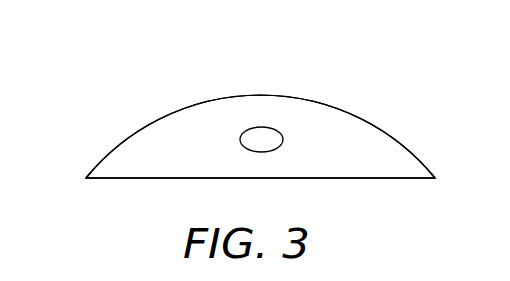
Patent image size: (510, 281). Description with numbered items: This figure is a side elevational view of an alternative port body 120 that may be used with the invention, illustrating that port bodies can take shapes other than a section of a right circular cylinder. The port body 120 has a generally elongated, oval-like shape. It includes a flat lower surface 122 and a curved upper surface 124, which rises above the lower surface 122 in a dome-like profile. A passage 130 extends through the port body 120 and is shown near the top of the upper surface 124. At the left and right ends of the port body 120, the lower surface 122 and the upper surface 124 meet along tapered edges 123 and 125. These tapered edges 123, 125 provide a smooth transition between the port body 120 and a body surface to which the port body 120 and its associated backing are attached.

The port body 120 is at (327, 73).
The lower surface 122 is at (147, 180).
The tapered edge 123 is at (86, 178).
The upper surface 124 is at (203, 101).
The tapered edge 125 is at (435, 178).
The passage 130 is at (263, 135).